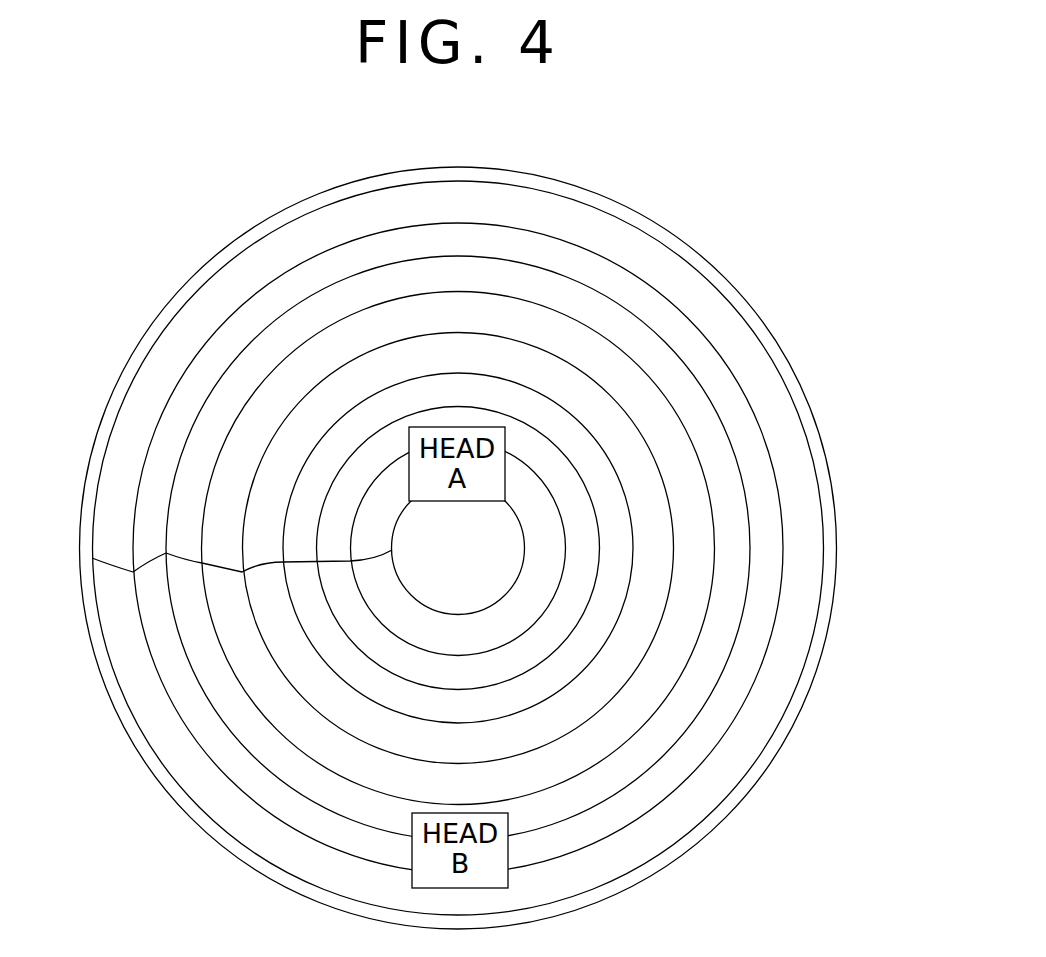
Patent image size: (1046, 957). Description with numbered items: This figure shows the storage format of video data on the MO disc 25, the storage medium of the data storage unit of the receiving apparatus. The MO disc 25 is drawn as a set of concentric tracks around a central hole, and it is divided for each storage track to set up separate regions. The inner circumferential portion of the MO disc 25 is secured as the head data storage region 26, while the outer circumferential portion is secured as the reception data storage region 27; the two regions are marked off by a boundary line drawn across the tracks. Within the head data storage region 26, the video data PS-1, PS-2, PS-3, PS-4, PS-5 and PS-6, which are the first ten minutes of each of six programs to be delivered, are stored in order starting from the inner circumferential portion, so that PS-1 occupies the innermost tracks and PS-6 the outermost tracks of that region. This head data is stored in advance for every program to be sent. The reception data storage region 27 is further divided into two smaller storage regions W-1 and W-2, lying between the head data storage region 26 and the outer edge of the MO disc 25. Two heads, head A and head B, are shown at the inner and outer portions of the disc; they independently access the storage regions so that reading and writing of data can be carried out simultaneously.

The MO disc 25 is at (702, 838).
The head data storage region 26 is at (242, 572).
The reception data storage region 27 is at (133, 572).
The video data of program one PS-1 is at (380, 498).
The video data of program two PS-2 is at (393, 447).
The video data of program three PS-3 is at (485, 398).
The video data of program four PS-4 is at (582, 398).
The video data of program five PS-5 is at (668, 445).
The video data of program six PS-6 is at (728, 498).
The first smaller storage region W-1 is at (763, 598).
The second smaller storage region W-2 is at (757, 707).